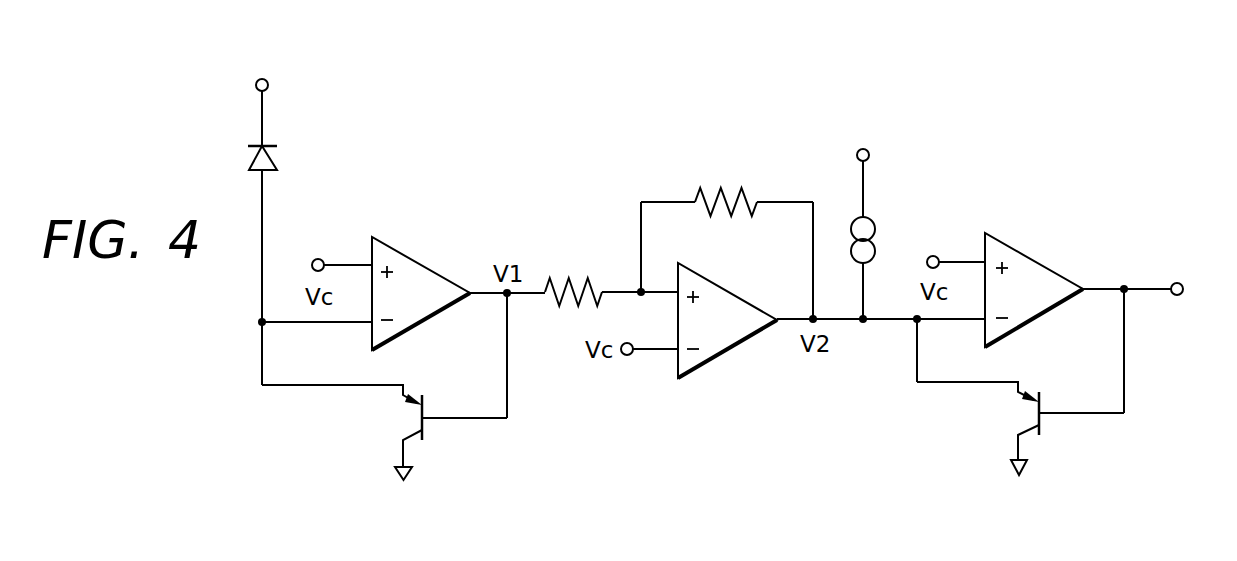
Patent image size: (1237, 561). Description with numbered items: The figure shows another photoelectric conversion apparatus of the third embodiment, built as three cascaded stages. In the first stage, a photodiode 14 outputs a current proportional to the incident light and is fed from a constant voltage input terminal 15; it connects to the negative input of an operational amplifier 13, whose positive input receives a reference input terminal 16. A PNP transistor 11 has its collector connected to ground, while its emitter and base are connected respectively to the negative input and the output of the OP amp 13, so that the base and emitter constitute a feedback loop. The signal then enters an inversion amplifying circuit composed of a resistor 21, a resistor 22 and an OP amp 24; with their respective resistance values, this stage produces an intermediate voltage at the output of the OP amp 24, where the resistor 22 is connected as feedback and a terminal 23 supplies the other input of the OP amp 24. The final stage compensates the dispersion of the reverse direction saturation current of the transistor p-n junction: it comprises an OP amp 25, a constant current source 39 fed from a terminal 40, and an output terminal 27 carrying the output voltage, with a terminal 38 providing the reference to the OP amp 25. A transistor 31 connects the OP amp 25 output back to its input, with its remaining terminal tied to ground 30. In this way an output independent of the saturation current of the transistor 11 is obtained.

The PNP transistor 11 is at (407, 420).
The operational amplifier 13 is at (420, 262).
The photodiode 14 is at (257, 154).
The constant voltage input terminal 15 is at (268, 79).
The reference input terminal 16 is at (323, 259).
The resistor 21 is at (576, 278).
The resistor 22 is at (728, 192).
The control voltage terminal 23 is at (630, 356).
The OP amp 24 is at (733, 292).
The OP amp 25 is at (1035, 258).
The output terminal 27 is at (1182, 283).
The ground 30 is at (1012, 468).
The transistor 31 is at (1023, 413).
The control voltage terminal 38 is at (937, 256).
The current source 39 is at (871, 219).
The terminal 40 is at (868, 150).